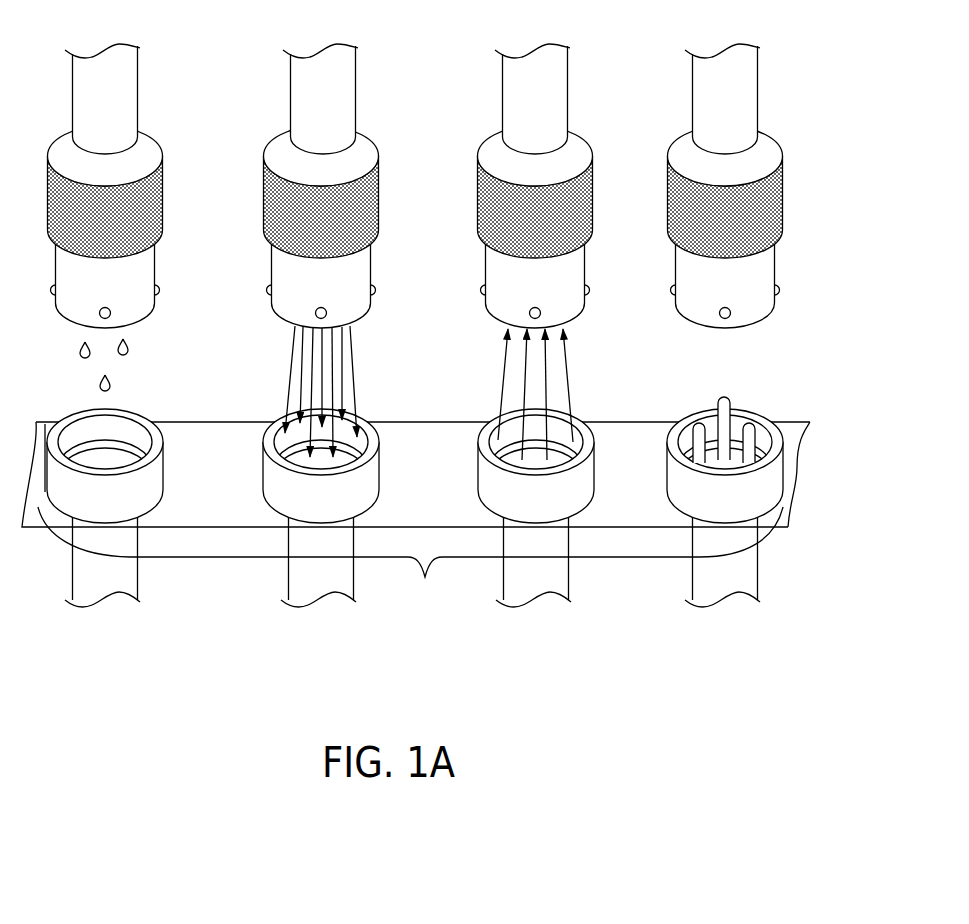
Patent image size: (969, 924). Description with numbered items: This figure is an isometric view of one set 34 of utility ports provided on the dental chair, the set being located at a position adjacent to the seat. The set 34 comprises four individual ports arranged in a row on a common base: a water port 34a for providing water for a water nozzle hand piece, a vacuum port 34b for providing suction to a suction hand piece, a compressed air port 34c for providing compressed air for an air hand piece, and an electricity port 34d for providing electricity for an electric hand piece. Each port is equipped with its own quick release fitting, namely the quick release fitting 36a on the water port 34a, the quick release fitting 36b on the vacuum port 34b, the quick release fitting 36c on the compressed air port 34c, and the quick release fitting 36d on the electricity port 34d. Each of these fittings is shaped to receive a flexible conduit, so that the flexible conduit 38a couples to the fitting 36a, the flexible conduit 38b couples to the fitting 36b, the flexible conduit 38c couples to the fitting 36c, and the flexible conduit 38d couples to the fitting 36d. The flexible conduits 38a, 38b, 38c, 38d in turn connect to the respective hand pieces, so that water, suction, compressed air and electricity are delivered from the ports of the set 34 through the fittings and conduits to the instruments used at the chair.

The set of utility ports 34 is at (416, 515).
The water port 34a is at (148, 423).
The vacuum port 34b is at (368, 421).
The compressed air port 34c is at (579, 421).
The electricity port 34d is at (758, 421).
The quick release fitting 36a is at (118, 461).
The quick release fitting 36b is at (343, 301).
The quick release fitting 36c is at (562, 300).
The quick release fitting 36d is at (736, 460).
The flexible conduit 38a is at (122, 78).
The flexible conduit 38b is at (332, 78).
The flexible conduit 38c is at (545, 78).
The flexible conduit 38d is at (738, 78).